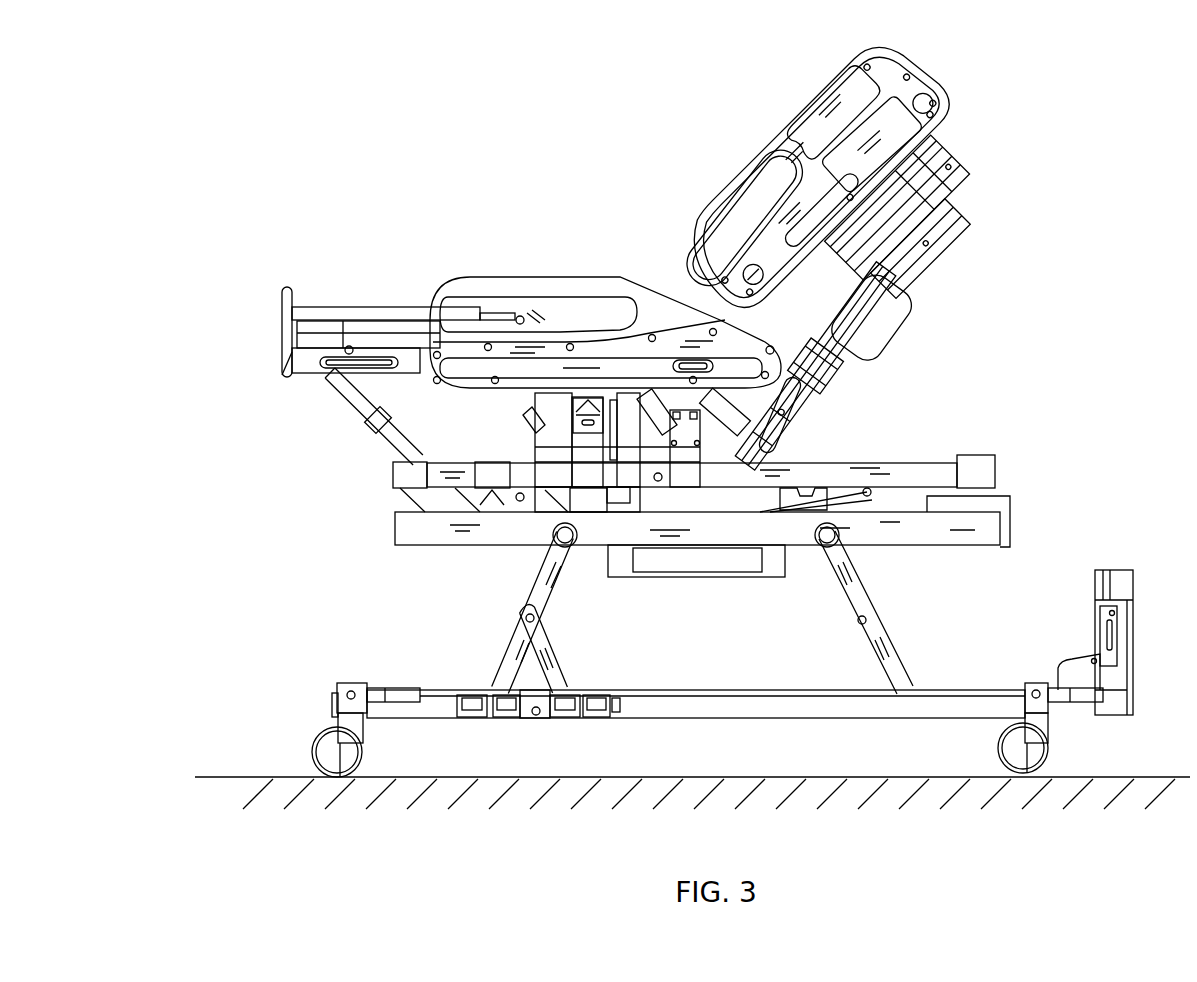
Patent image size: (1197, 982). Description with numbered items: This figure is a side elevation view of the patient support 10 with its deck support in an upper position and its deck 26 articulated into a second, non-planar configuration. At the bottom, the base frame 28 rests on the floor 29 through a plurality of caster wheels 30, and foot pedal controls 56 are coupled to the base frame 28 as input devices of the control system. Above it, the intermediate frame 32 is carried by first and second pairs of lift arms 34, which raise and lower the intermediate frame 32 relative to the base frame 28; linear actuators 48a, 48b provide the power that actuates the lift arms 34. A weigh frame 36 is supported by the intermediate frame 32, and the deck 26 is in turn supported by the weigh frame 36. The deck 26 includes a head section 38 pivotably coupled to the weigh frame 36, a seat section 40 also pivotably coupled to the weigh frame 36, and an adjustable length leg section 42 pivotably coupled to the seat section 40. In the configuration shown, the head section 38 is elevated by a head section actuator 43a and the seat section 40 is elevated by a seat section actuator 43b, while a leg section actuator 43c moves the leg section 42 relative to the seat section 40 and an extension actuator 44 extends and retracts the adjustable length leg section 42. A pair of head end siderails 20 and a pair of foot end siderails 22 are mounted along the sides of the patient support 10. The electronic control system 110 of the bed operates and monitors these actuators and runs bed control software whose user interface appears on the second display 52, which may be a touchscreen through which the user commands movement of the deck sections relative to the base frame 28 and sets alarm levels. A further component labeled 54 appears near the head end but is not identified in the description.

The patient support 10 is at (694, 439).
The head end siderails 20 is at (705, 157).
The foot end siderails 22 is at (639, 290).
The deck 26 is at (300, 372).
The base frame 28 is at (286, 680).
The floor 29 is at (867, 777).
The caster wheels 30 is at (287, 734).
The intermediate frame 32 is at (879, 551).
The lift arms 34 is at (566, 627).
The weigh frame 36 is at (944, 459).
The head section 38 is at (972, 222).
The seat section 40 is at (543, 292).
The adjustable length leg section 42 is at (350, 285).
The head section actuator 43a is at (886, 350).
The seat section actuator 43b is at (555, 418).
The leg section actuator 43c is at (365, 430).
The extension actuator 44 is at (409, 343).
The linear actuator 48a is at (594, 527).
The linear actuator 48b is at (829, 470).
The second display 52 is at (823, 110).
The head panel 54 is at (903, 132).
The foot pedal controls 56 is at (571, 740).
The electronic control system 110 is at (718, 578).